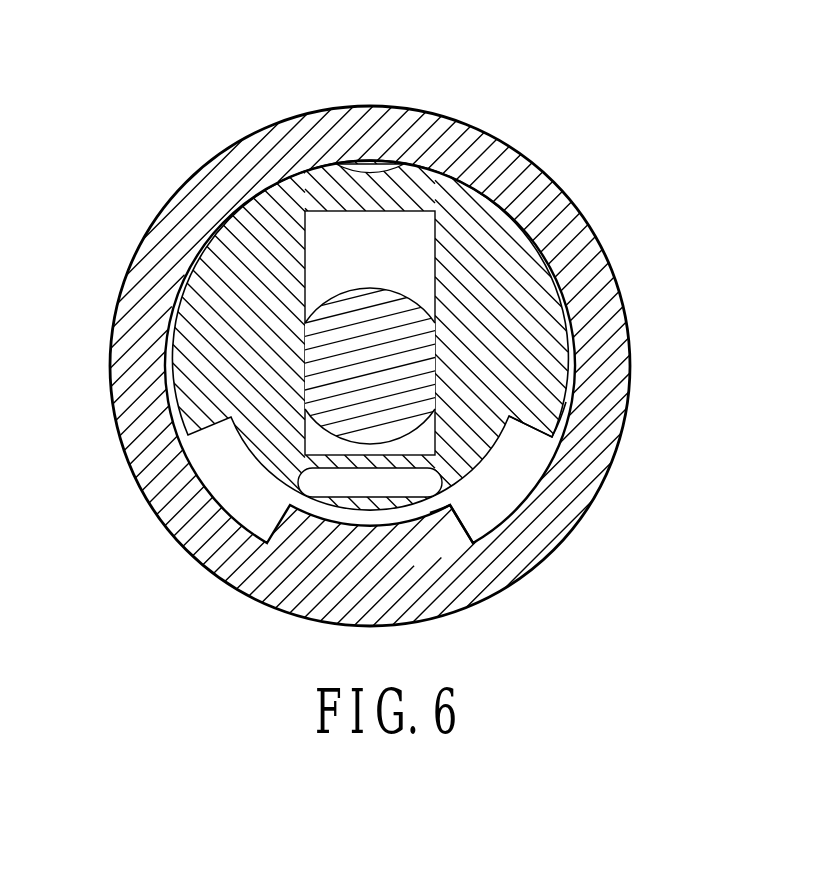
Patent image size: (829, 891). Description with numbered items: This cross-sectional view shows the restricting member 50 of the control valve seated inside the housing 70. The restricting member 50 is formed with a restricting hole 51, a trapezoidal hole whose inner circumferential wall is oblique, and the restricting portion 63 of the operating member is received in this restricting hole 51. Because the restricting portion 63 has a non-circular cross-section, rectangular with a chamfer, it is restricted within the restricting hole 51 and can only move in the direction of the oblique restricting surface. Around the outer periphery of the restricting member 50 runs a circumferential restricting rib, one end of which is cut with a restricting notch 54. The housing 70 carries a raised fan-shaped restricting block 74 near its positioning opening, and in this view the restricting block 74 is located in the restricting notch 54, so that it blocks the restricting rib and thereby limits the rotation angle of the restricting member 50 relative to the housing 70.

The housing 70 is at (591, 228).
The restricting member 50 is at (570, 354).
The restricting hole 51 is at (383, 243).
The restricting portion 63 is at (332, 355).
The restricting notch 54 is at (548, 432).
The restricting block 74 is at (462, 522).